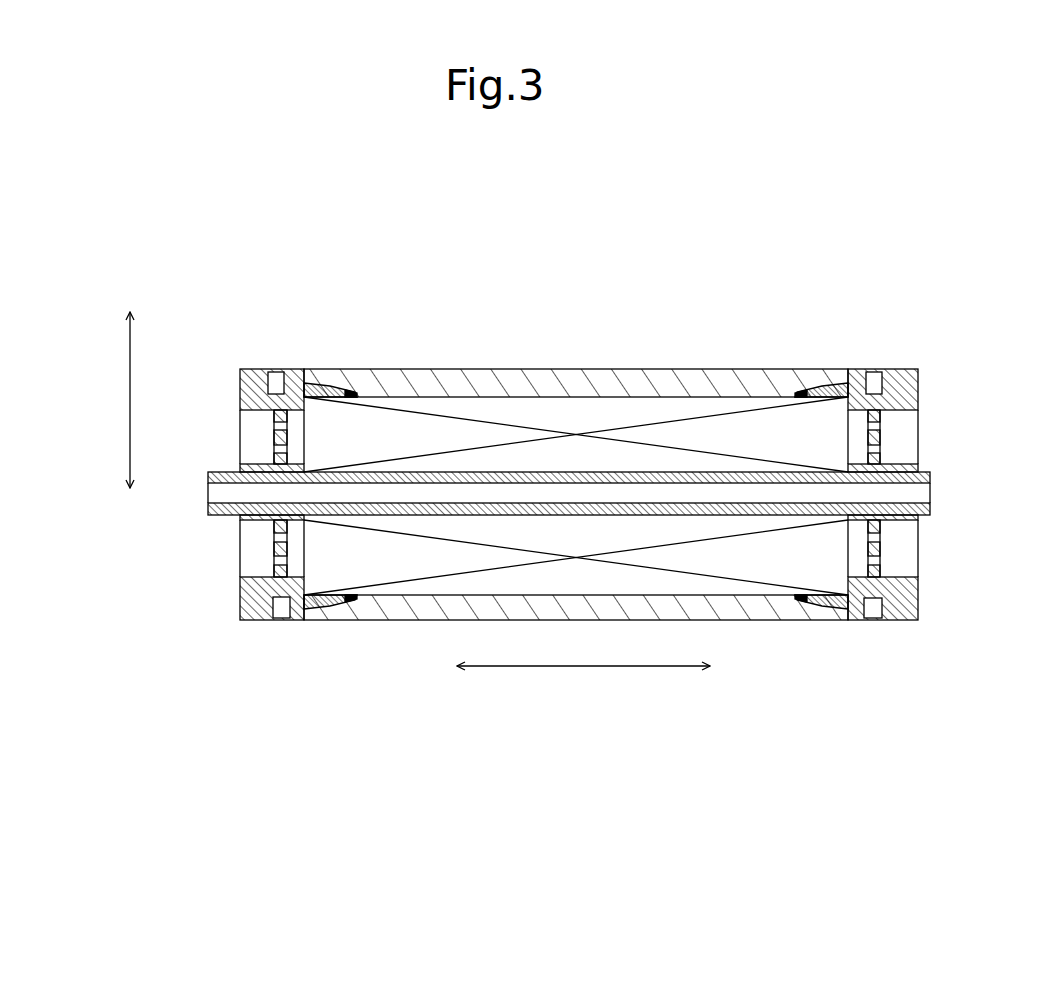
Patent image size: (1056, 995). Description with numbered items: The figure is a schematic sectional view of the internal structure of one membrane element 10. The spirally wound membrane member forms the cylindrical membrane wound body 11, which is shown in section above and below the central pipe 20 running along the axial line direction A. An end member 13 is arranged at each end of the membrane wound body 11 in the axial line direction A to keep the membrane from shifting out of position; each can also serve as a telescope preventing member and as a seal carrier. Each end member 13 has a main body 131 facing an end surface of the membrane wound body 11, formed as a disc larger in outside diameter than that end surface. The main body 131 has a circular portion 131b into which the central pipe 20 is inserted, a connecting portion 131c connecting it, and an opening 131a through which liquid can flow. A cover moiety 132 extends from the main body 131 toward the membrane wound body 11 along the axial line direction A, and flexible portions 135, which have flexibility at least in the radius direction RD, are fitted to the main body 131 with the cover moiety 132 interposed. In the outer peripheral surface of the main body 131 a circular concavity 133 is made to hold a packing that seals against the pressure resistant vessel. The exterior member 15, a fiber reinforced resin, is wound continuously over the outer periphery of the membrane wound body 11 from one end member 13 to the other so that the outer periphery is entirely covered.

The membrane element 10 is at (668, 332).
The membrane wound body 11 is at (530, 369).
The end member 13 is at (216, 395).
The exterior member 15 is at (437, 369).
The central pipe 20 is at (212, 472).
The main body 131 is at (240, 590).
The opening 131a is at (273, 563).
The circular portion 131b is at (230, 520).
The connecting portion 131c is at (248, 442).
The cover moiety 132 is at (325, 386).
The circular concavity 133 is at (277, 370).
The flexible portion 135 is at (352, 390).
The radius direction RD is at (112, 400).
The axial line direction A is at (600, 666).